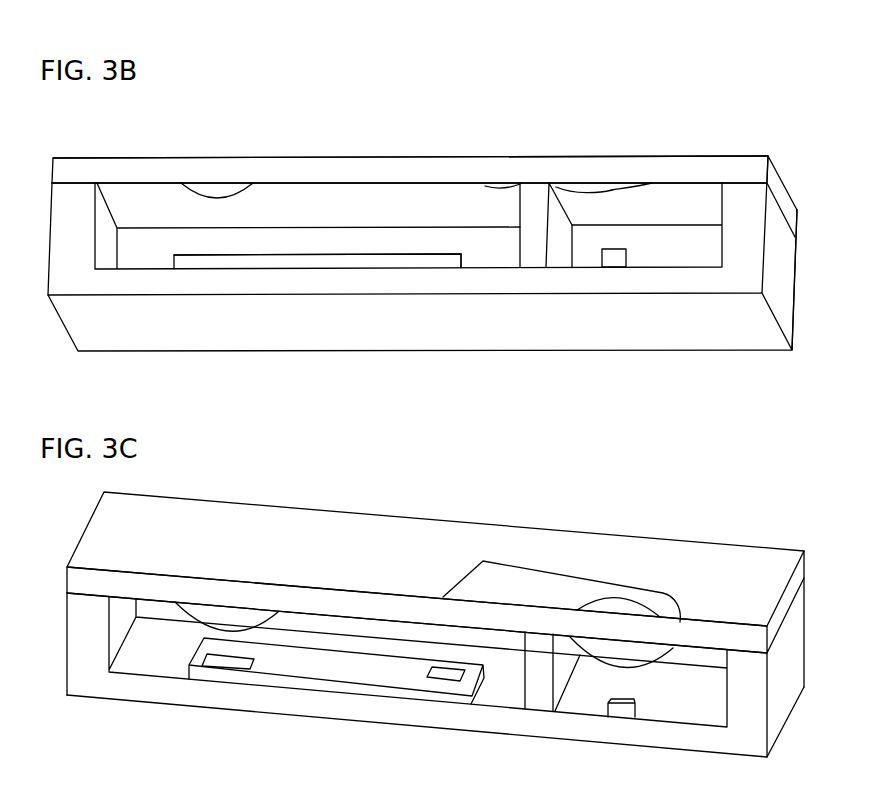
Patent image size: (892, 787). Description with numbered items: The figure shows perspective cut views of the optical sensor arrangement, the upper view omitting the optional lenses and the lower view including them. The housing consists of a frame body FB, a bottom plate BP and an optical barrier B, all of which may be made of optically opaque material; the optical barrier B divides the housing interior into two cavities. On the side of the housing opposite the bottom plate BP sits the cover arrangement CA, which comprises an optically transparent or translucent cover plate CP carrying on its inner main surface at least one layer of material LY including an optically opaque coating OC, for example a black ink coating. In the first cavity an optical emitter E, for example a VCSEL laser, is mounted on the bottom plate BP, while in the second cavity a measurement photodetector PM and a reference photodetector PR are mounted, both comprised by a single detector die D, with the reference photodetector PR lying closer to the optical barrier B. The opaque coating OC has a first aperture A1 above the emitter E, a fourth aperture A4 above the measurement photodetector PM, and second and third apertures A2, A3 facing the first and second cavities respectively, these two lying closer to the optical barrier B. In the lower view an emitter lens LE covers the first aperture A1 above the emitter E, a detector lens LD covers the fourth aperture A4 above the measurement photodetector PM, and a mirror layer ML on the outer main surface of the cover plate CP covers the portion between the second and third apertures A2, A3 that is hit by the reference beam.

In FIG. 3B, the cover arrangement CA is at (424, 196).
In FIG. 3C, the cover arrangement CA is at (435, 572).
In FIG. 3B, the cover plate CP is at (410, 169).
In FIG. 3C, the cover plate CP is at (417, 610).
In FIG. 3B, the frame body FB is at (422, 253).
In FIG. 3C, the frame body FB is at (435, 654).
In FIG. 3B, the bottom plate BP is at (422, 280).
In FIG. 3C, the bottom plate BP is at (435, 721).
In FIG. 3B, the first aperture A1 is at (633, 189).
In FIG. 3B, the second aperture A2 is at (556, 188).
In FIG. 3B, the third aperture A3 is at (509, 194).
In FIG. 3B, the fourth aperture A4 is at (180, 196).
In FIG. 3B, the layer of material LY is at (266, 213).
In FIG. 3B, the optically opaque coating OC is at (317, 245).
In FIG. 3B, the detector die D is at (458, 261).
In FIG. 3C, the detector die D is at (336, 671).
In FIG. 3B, the optical barrier B is at (546, 225).
In FIG. 3C, the optical barrier B is at (552, 671).
In FIG. 3B, the optical emitter E is at (617, 258).
In FIG. 3C, the optical emitter E is at (637, 705).
In FIG. 3C, the detector lens LD is at (226, 616).
In FIG. 3C, the mirror layer ML is at (561, 591).
In FIG. 3C, the emitter lens LE is at (621, 633).
In FIG. 3C, the measurement photodetector PM is at (251, 667).
In FIG. 3C, the reference photodetector PR is at (431, 672).